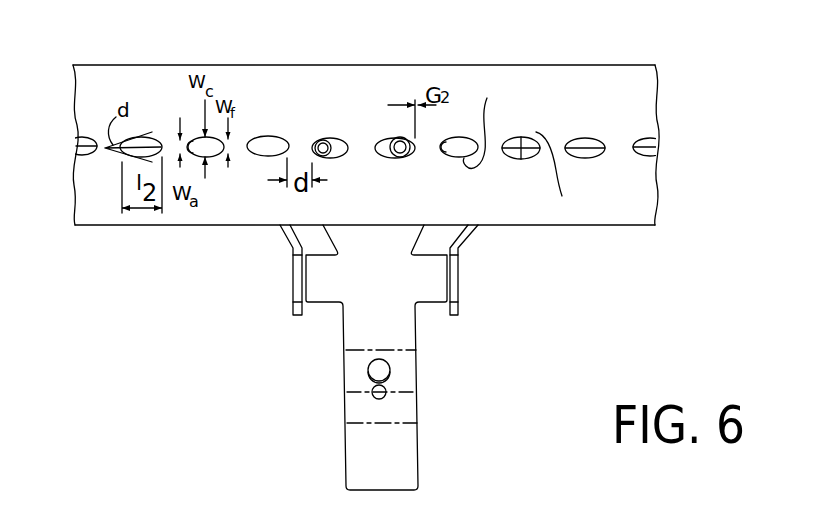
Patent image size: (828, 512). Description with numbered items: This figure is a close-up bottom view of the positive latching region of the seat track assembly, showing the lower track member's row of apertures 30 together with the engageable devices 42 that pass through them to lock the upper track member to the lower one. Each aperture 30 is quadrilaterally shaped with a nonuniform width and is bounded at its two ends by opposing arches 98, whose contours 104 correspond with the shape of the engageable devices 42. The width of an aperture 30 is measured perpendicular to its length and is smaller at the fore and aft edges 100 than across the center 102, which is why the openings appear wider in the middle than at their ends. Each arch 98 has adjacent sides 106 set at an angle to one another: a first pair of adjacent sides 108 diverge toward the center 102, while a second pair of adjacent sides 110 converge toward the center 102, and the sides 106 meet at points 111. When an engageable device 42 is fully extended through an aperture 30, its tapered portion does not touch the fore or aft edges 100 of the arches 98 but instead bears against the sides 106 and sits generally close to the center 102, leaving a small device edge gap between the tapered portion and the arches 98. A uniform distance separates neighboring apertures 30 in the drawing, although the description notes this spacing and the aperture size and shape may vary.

The apertures 30 is at (643, 137).
The engageable devices 42 is at (393, 137).
The arches 98 is at (244, 23).
The fore and aft edges 100 is at (163, 147).
The centers 102 is at (273, 144).
The contours 104 is at (411, 158).
The adjacent sides 106 is at (597, 178).
The first pair of adjacent sides 108 is at (508, 132).
The second pair of adjacent sides 110 is at (531, 152).
The points 111 is at (462, 138).